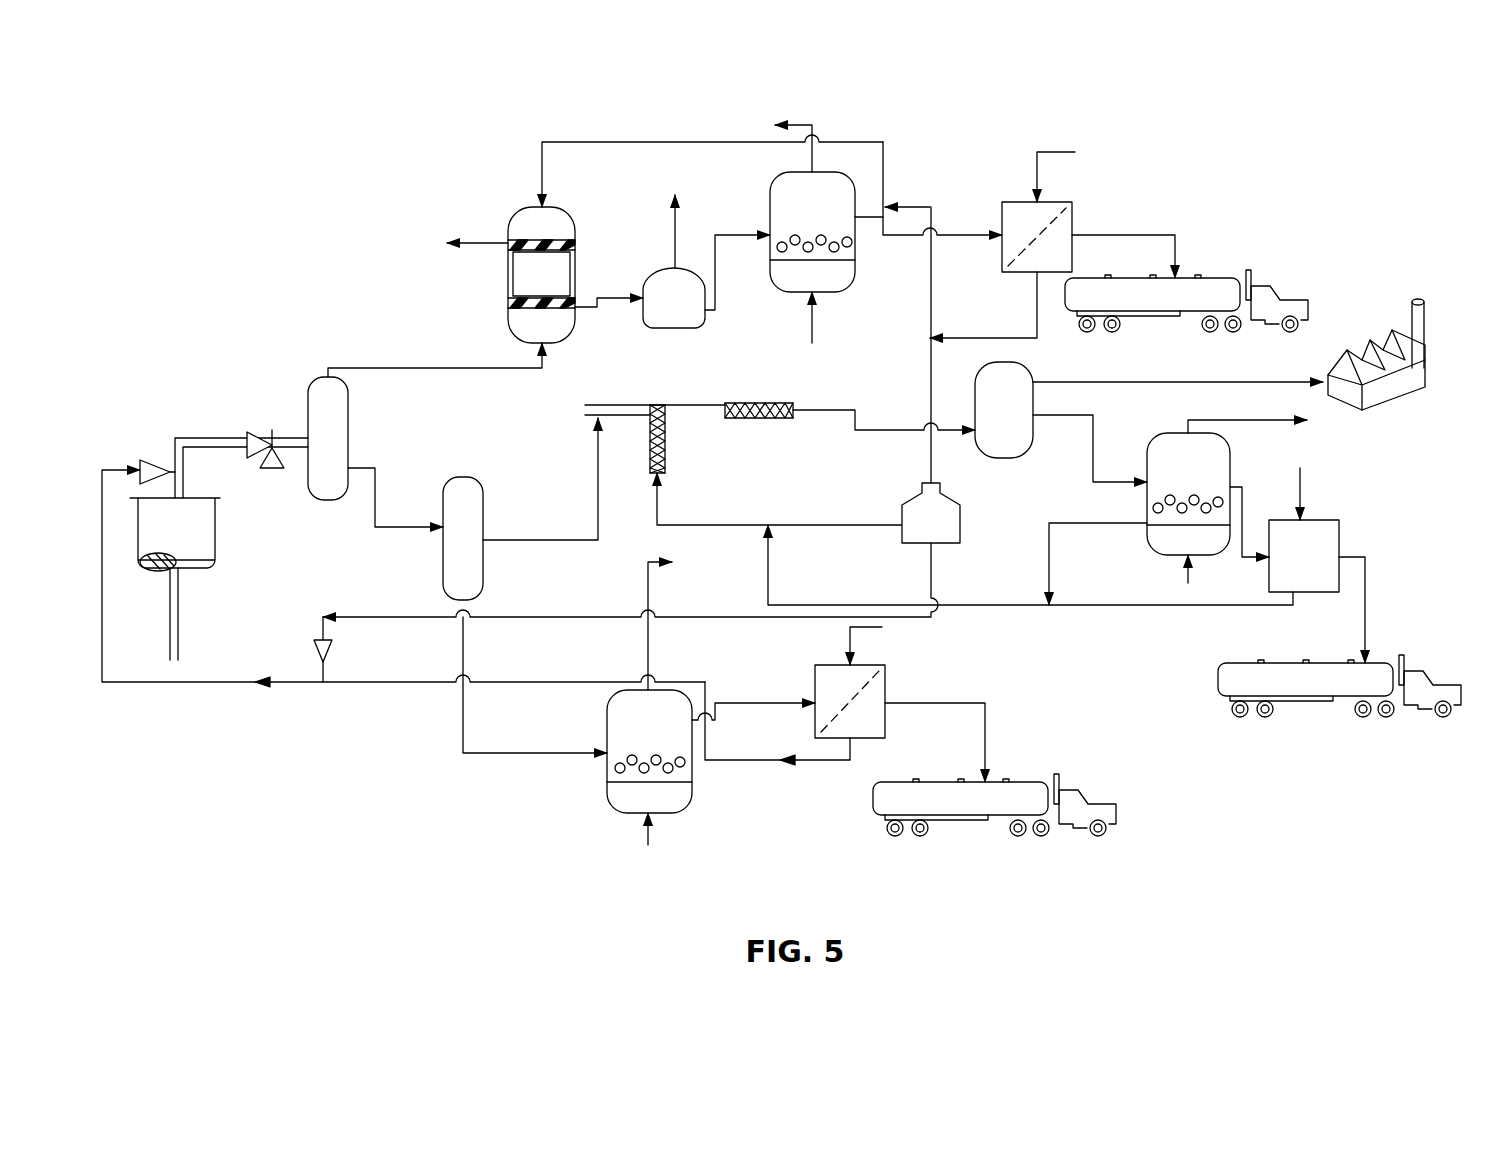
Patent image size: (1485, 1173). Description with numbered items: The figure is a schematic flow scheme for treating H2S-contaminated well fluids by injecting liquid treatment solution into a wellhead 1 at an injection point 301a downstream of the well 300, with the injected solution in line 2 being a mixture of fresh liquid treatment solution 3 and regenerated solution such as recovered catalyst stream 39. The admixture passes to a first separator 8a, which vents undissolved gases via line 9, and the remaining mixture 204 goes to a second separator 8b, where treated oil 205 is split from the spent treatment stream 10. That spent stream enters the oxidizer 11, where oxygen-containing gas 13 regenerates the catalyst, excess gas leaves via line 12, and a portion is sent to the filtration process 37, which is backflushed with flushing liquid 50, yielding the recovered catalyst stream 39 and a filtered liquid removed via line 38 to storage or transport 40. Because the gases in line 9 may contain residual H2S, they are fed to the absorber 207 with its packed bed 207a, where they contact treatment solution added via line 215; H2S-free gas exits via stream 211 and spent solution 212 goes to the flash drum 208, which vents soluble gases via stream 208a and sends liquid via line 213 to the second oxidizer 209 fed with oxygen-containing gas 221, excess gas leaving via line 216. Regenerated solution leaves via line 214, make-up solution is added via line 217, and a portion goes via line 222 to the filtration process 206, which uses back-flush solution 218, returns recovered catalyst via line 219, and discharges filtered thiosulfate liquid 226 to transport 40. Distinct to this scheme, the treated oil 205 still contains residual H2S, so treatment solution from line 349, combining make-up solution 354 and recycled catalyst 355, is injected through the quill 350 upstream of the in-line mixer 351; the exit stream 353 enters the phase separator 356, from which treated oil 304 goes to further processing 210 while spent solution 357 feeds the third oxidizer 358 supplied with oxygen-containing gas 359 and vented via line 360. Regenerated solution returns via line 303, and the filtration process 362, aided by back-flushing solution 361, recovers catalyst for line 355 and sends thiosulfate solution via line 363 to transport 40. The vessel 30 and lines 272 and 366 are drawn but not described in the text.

The wellhead 1 is at (272, 435).
The liquid treatment solution line 2 is at (185, 688).
The fresh liquid treatment solution 3 is at (340, 617).
The first separator 8a is at (328, 438).
The second separator 8b is at (463, 538).
The undissolved gas line 9 is at (455, 370).
The spent treatment stream 10 is at (465, 728).
The oxidizer 11 is at (711, 751).
The excess gas line 12 is at (655, 588).
The oxygen-containing gas 13 is at (645, 830).
The mixing vessel 30 is at (931, 513).
The filtration process 37 is at (795, 715).
The filtered liquid line 38 is at (960, 703).
The recovered catalyst stream 39 is at (360, 672).
The storage/transport 40 is at (1250, 282).
The flushing liquid 50 is at (848, 632).
The mixture of spent treatment solution and treated oil 204 is at (375, 512).
The treated oil line 205 is at (525, 540).
The filtration process 206 is at (1037, 237).
The absorber 207 is at (541, 275).
The packed bed 207a is at (541, 274).
The flash drum 208 is at (674, 298).
The flash gas stream 208a is at (675, 222).
The second oxidizer 209 is at (812, 232).
The further processing 210 is at (1420, 315).
The H2S-free gas stream 211 is at (480, 250).
The spent treatment stream 212 is at (605, 295).
The spent liquid treatment solution line 213 is at (718, 258).
The regenerated liquid treatment solution line 214 is at (870, 222).
The liquid treatment solution feed to absorber 215 is at (652, 142).
The excess gas line 216 is at (805, 125).
The make-up treatment solution line 217 is at (931, 462).
The back-flush solution 218 is at (1045, 158).
The recovered catalyst line 219 is at (1037, 280).
The oxygen-containing gas 221 is at (815, 322).
The regenerated solution line to filtration 222 is at (960, 235).
The filtered regenerated liquid treatment solution 226 is at (1120, 235).
The line 272 is at (912, 195).
The well 300 is at (219, 549).
The injection point 301a is at (125, 470).
The regenerated liquid treatment solution line 303 is at (1075, 530).
The treated oil line 304 is at (1150, 382).
The injection line 349 is at (693, 525).
The quill 350 is at (665, 448).
The in-line mixer 351 is at (760, 418).
The exit stream 353 is at (880, 430).
The fresh make-up liquid treatment solution line 354 is at (798, 525).
The recycled regenerated catalyst line 355 is at (1130, 605).
The phase separator 356 is at (1004, 410).
The spent liquid treatment solution line 357 is at (1093, 455).
The third oxidizer 358 is at (1188, 494).
The oxygen-containing gas 359 is at (1190, 578).
The excess gas line 360 is at (1235, 420).
The back-flushing solution line 361 is at (1312, 490).
The filtration process 362 is at (1304, 556).
The thiosulfate solution line 363 is at (1375, 580).
The line 366 is at (1242, 487).